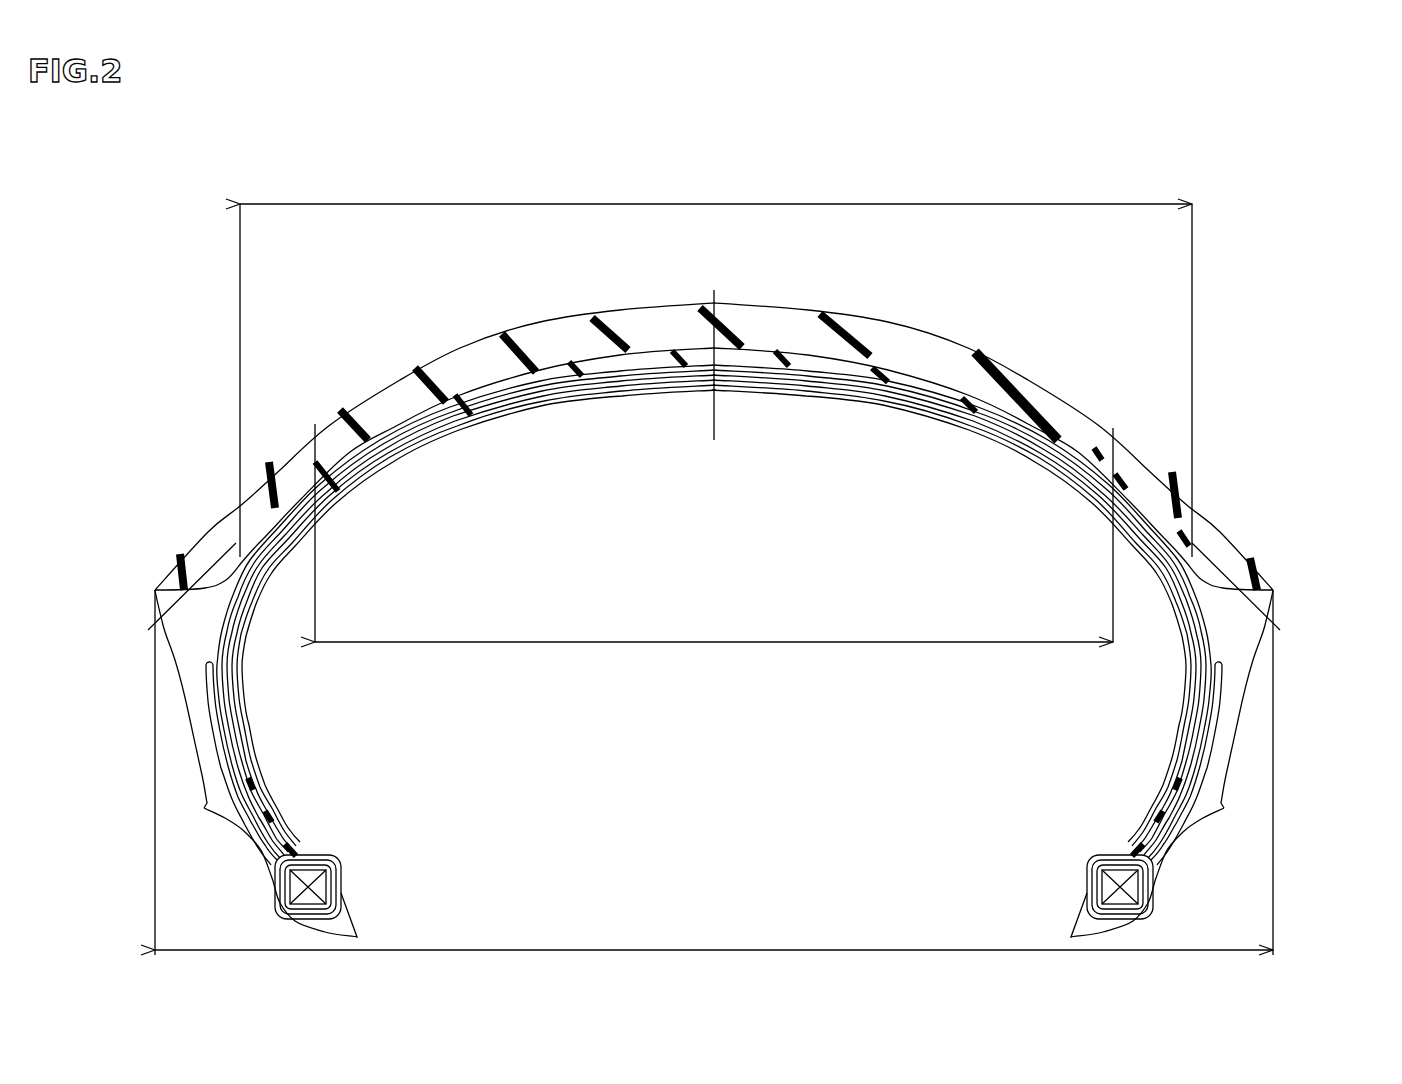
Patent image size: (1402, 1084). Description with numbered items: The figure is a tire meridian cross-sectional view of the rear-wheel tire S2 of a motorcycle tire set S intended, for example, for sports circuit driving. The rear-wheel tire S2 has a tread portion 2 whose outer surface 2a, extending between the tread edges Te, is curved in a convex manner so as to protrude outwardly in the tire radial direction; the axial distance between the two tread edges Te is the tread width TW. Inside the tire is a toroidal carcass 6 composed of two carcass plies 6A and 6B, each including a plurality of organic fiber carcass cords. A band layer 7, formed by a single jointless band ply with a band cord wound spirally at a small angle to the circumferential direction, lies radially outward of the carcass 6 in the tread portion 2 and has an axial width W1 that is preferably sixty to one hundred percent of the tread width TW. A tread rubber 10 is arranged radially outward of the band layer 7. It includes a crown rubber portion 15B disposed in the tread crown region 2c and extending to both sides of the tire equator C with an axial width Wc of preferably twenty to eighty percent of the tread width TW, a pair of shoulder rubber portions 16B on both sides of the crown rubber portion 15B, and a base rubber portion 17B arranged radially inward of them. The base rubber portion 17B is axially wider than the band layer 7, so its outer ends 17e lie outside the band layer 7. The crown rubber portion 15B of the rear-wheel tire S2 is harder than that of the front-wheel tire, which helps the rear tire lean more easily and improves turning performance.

The tread rubber 10 is at (1100, 368).
The tread portion 2 is at (1035, 348).
The outer surface 2a is at (547, 320).
The tread crown region 2c is at (803, 300).
The carcass 6 is at (1000, 712).
The carcass ply 6A is at (1178, 742).
The carcass ply 6B is at (1150, 800).
The band layer 7 is at (1053, 473).
The crown rubber portion 15B is at (938, 356).
The shoulder rubber portion 16B is at (202, 562).
The base rubber portion 17B is at (400, 437).
The outer end 17e is at (148, 630).
The tread edge Te is at (155, 590).
The tire equator C is at (713, 352).
The axial width of the band layer W1 is at (716, 366).
The width of the crown rubber portion Wc is at (714, 533).
The tread width TW is at (714, 772).
The motorcycle tire set S is at (1168, 137).
The rear-wheel tire S2 is at (1050, 182).